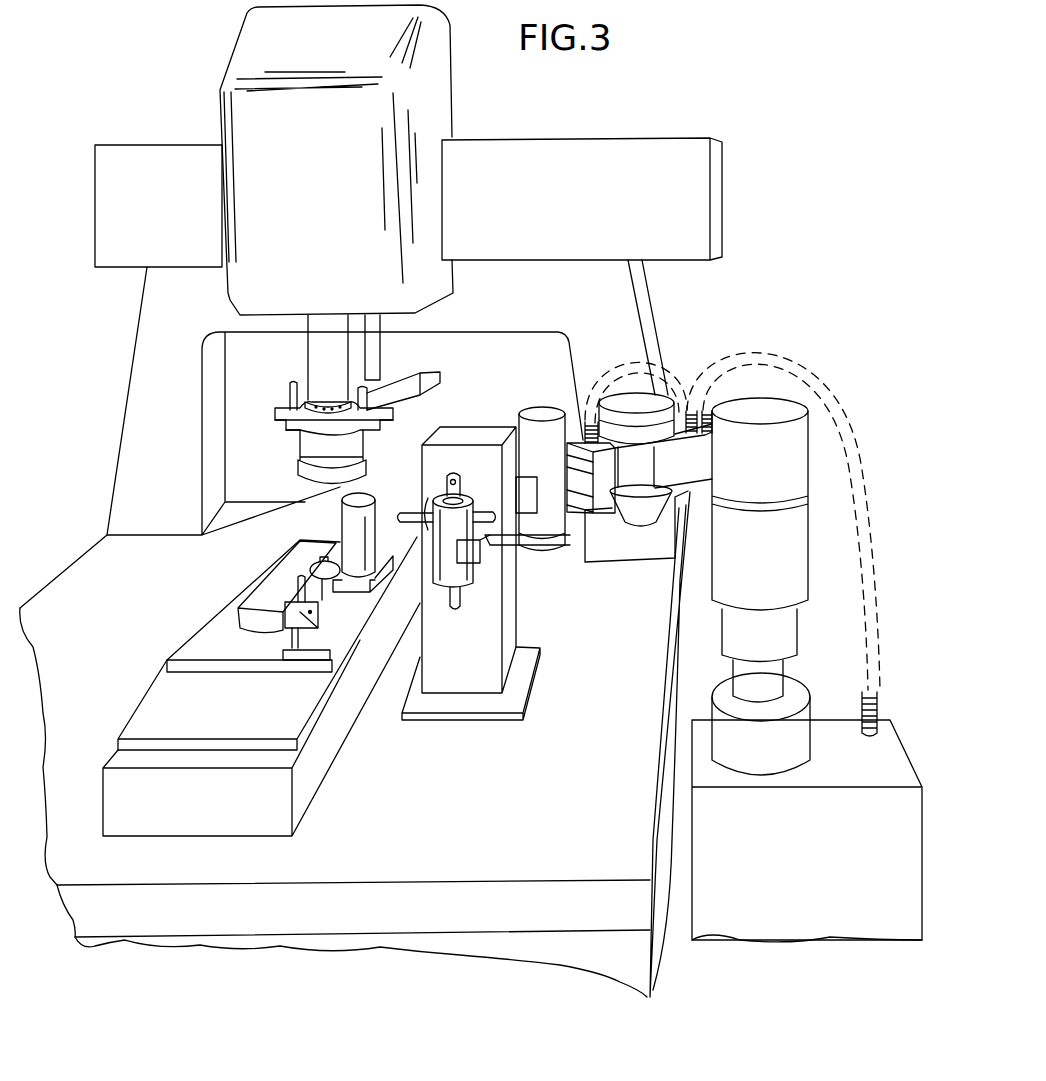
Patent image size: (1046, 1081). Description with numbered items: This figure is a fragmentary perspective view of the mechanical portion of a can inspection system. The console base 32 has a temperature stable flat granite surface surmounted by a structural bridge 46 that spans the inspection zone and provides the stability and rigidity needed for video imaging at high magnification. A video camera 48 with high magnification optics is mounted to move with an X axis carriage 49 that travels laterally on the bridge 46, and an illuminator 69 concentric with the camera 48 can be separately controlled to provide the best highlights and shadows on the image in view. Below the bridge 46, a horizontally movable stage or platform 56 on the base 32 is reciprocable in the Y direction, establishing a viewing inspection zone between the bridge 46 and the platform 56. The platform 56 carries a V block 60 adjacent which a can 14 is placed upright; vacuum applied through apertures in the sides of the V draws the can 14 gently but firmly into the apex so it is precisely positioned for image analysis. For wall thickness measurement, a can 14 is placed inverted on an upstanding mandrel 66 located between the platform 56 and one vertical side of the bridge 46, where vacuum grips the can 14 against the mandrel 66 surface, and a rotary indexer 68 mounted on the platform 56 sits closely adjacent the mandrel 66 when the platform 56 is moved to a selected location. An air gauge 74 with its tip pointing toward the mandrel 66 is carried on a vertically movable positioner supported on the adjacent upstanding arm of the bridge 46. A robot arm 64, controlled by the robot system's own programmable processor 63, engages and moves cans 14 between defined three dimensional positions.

The can 14 is at (473, 587).
The console base 32 is at (400, 940).
The structural bridge 46 is at (137, 343).
The video camera 48 is at (317, 362).
The X axis carriage 49 is at (658, 143).
The stage or platform 56 is at (187, 652).
The V block 60 is at (240, 615).
The programmable processor 63 is at (925, 855).
The robot arm 64 is at (703, 372).
The mandrel 66 is at (340, 524).
The rotary indexer 68 is at (280, 577).
The illuminator 69 is at (308, 435).
The air gauge 74 is at (425, 522).